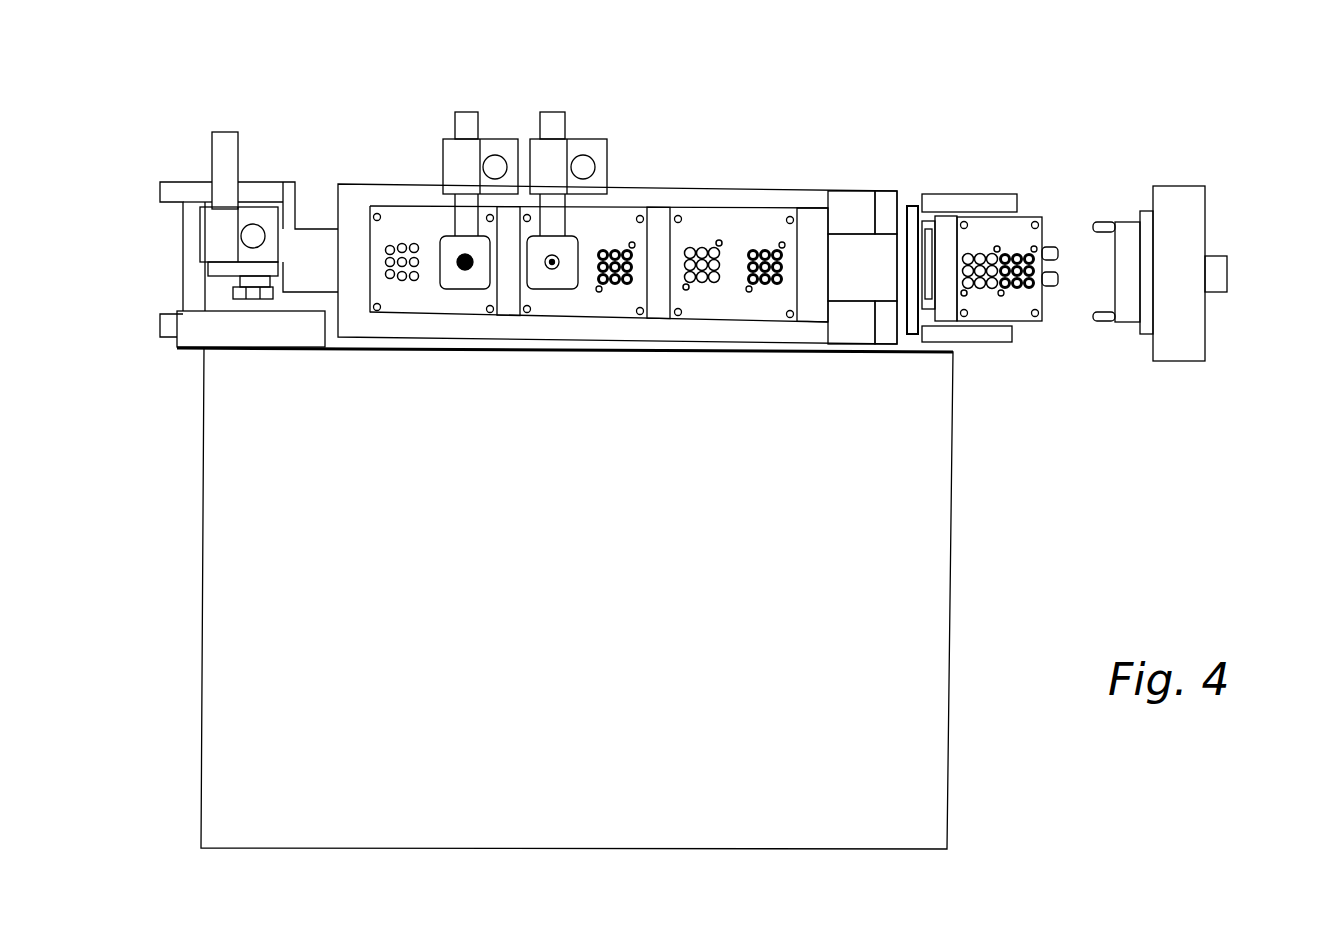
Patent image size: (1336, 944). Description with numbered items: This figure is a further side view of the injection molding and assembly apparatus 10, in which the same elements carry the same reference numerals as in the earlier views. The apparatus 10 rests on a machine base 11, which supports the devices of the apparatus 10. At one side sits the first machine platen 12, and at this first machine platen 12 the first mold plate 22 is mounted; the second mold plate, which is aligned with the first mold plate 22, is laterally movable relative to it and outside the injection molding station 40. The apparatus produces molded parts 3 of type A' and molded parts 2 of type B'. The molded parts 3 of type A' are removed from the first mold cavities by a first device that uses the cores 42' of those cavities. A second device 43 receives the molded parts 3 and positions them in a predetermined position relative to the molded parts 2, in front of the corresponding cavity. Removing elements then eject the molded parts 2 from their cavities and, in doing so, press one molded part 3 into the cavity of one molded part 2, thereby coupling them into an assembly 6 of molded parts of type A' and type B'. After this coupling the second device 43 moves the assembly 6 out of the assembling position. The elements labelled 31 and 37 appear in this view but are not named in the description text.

The molded parts of type B' 2 is at (846, 206).
The molded parts of type A' 3 is at (828, 222).
The assembly of molded parts 6 is at (235, 290).
The injection molding and assembly apparatus 10 is at (1166, 530).
The machine base 11 is at (952, 565).
The first machine platen 12 is at (1177, 362).
The first mold plate 22 is at (1129, 318).
The holder rail 31 is at (972, 202).
The dosing unit 37 is at (205, 138).
The injection molding station 40 is at (1204, 226).
The cores of the first mold cavities 42' is at (397, 213).
The second device 43 is at (440, 130).